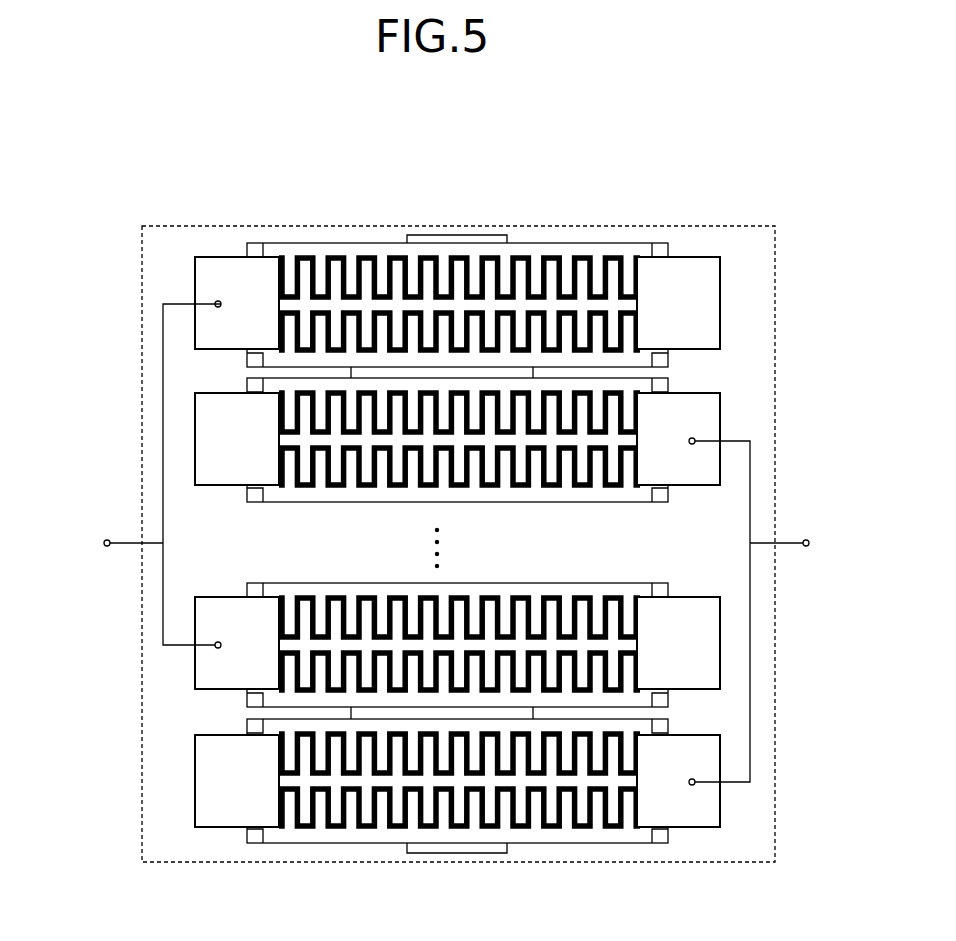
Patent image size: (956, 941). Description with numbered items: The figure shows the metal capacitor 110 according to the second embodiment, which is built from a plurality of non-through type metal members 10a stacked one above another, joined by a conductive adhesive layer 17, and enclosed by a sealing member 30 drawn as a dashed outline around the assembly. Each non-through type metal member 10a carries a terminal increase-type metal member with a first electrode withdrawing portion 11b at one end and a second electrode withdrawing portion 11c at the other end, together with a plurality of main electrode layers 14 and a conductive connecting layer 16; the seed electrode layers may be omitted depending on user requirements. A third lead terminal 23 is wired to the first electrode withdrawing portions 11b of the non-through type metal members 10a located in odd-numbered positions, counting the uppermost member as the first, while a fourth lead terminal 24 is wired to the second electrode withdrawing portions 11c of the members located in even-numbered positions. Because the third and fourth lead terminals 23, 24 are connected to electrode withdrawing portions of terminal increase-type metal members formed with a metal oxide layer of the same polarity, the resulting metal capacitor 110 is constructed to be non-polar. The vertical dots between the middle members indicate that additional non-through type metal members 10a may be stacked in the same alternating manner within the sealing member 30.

The metal capacitor 110 is at (403, 202).
The sealing member 30 is at (630, 225).
The conductive connecting layer 16 is at (483, 234).
The non-through type metal member 10a is at (178, 279).
The first electrode withdrawing portion 11b is at (212, 321).
The second electrode withdrawing portion 11c is at (690, 305).
The main electrode layer 14 is at (297, 843).
The conductive adhesive layer 17 is at (523, 373).
The third lead terminal 23 is at (104, 544).
The fourth lead terminal 24 is at (809, 543).